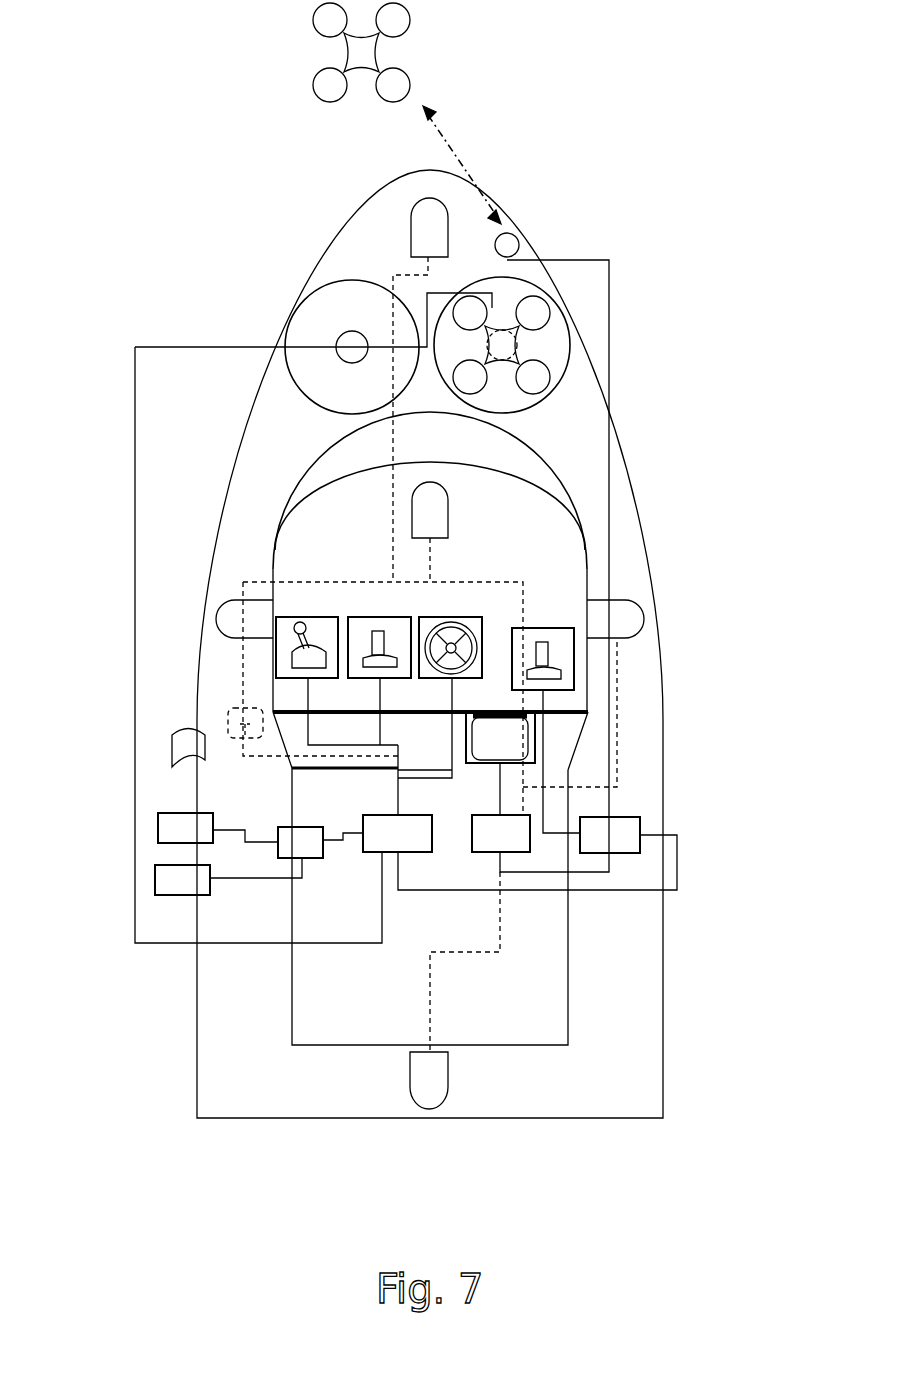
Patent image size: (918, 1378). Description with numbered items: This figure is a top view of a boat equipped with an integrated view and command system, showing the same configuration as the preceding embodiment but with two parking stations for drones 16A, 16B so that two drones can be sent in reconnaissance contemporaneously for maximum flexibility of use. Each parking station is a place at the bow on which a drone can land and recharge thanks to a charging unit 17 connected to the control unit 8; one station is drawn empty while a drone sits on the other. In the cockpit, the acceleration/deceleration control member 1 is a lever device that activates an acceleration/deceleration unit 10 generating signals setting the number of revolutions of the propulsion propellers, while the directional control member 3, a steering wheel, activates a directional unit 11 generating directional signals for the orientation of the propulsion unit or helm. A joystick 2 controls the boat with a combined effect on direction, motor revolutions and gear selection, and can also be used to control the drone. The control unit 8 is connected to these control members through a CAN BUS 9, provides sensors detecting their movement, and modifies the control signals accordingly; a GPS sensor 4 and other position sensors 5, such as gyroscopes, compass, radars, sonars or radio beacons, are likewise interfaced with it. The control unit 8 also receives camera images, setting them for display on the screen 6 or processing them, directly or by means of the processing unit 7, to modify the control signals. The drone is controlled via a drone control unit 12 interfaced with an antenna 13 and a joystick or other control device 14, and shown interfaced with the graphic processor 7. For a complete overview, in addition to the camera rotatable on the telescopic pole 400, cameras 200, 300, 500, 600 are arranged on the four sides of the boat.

The acceleration/deceleration control member 1 is at (287, 622).
The joystick 2 is at (375, 623).
The directional control member 3 is at (433, 627).
The GPS sensor 4 is at (180, 735).
The position sensors 5 is at (245, 705).
The screen 6 is at (488, 723).
The processing unit 7 is at (483, 842).
The control unit 8 is at (412, 828).
The CAN BUS 9 is at (310, 850).
The acceleration/deceleration unit 10 is at (165, 827).
The directional unit 11 is at (172, 882).
The drone control unit 12 is at (623, 820).
The antenna 13 is at (505, 248).
The drone control device 14 is at (543, 648).
The first parking station 16A is at (370, 312).
The second parking station 16B is at (460, 353).
The charging unit 17 is at (353, 355).
The camera 200 is at (230, 621).
The camera 300 is at (633, 622).
The telescopic pole 400 is at (435, 522).
The camera 500 is at (433, 220).
The camera 600 is at (428, 1092).